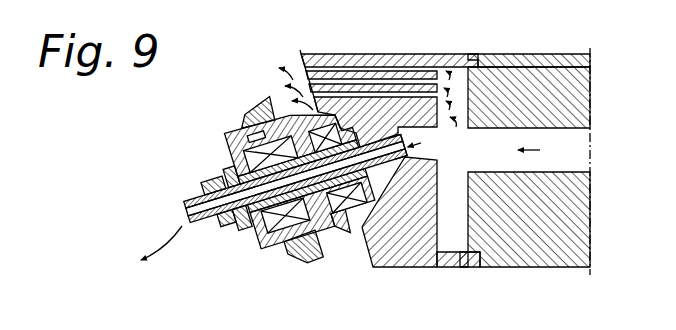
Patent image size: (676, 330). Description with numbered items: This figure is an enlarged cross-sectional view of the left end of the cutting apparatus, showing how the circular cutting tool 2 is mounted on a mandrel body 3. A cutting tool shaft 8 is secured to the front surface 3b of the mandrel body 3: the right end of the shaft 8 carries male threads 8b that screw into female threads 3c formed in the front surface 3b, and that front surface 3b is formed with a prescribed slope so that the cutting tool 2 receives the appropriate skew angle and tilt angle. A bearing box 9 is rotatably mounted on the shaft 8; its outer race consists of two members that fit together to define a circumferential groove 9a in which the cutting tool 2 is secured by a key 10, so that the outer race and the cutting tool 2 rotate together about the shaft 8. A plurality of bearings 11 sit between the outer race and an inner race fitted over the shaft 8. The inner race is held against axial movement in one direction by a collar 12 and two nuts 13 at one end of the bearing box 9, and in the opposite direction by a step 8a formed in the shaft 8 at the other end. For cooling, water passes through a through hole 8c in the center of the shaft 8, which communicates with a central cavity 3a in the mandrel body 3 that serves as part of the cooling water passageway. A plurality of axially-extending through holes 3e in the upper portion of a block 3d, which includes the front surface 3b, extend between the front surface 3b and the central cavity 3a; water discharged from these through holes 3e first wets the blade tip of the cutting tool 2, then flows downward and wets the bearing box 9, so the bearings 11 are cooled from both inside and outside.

The cutting tool 2 is at (264, 98).
The mandrel body 3 is at (542, 62).
The central cavity 3a is at (567, 142).
The front surface 3b is at (370, 250).
The female threads 3c is at (447, 180).
The block 3d is at (407, 60).
The through holes 3e is at (367, 90).
The cutting tool shaft 8 is at (190, 199).
The step 8a is at (385, 182).
The male threads 8b is at (372, 130).
The through hole 8c is at (187, 216).
The bearing box 9 is at (262, 255).
The circumferential groove 9a is at (293, 258).
The key 10 is at (254, 113).
The bearings 11 is at (237, 142).
The collar 12 is at (233, 167).
The nuts 13 is at (228, 230).